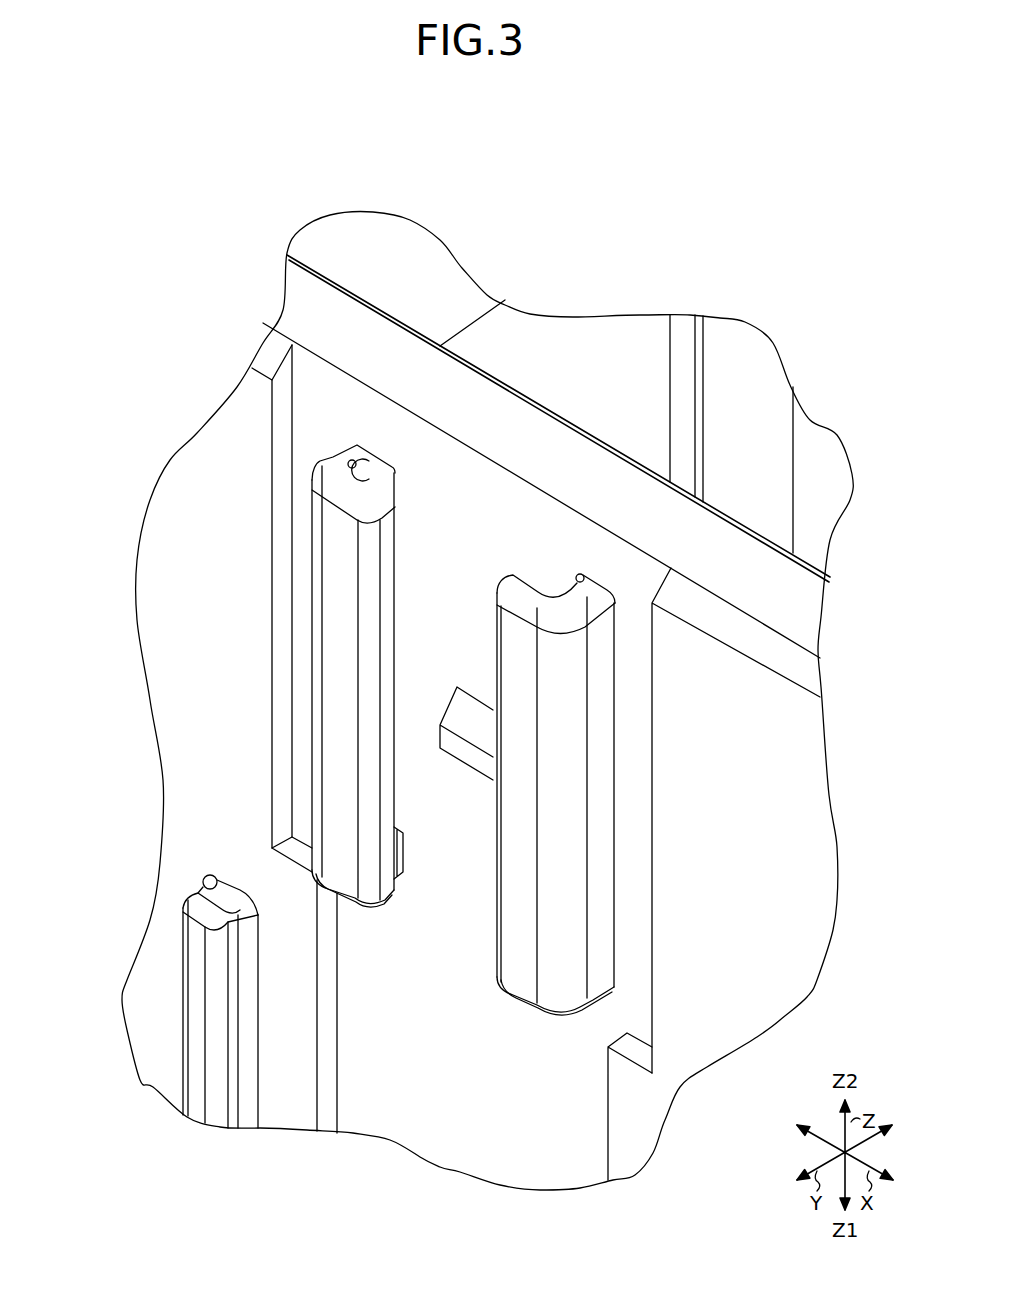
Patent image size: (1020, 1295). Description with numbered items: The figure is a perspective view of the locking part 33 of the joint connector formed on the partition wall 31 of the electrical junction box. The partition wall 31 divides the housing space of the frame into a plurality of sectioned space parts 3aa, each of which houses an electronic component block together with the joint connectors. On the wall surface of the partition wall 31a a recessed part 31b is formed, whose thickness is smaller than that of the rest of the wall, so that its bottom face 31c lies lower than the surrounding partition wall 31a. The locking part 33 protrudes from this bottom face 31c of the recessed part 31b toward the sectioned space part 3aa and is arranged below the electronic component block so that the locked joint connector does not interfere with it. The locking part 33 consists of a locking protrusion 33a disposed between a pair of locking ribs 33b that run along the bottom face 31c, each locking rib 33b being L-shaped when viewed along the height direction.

The partition wall 31 is at (485, 405).
The partition wall 31a is at (223, 478).
The recessed part 31b is at (292, 552).
The bottom face 31c is at (432, 463).
The sectioned space part 3aa is at (552, 363).
The locking part 33 is at (449, 627).
The locking protrusion 33a is at (463, 747).
The locking ribs 33b is at (338, 497).